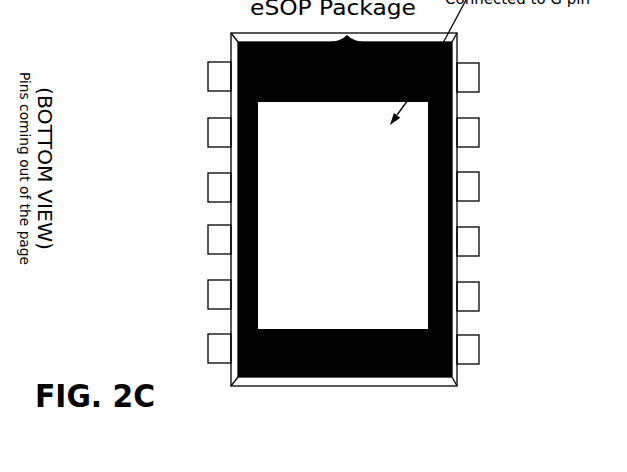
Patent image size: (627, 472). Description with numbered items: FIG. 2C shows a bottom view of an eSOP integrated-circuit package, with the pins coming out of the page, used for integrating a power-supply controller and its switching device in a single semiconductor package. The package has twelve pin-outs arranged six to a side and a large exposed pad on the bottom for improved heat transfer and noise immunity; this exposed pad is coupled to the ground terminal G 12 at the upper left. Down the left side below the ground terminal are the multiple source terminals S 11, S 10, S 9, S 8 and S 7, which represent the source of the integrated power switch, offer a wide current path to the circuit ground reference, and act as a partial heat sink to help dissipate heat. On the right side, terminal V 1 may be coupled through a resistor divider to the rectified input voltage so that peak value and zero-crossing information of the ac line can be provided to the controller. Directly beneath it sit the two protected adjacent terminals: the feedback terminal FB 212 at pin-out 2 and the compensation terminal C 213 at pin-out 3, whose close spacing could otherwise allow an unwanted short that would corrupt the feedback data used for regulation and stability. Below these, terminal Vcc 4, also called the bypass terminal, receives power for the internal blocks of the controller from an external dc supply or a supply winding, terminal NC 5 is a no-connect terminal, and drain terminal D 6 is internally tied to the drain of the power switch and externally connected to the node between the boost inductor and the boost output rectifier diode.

The feedback terminal FB 212 is at (530, 121).
The compensation terminal C 213 is at (533, 172).
The terminal V 1 is at (499, 78).
The pin-out of terminal FB 2 is at (575, 112).
The pin-out of terminal C 3 is at (499, 186).
The terminal Vcc 4 is at (509, 241).
The terminal NC 5 is at (507, 296).
The drain terminal D 6 is at (507, 349).
The source terminal S 7 is at (185, 348).
The source terminal S 8 is at (184, 294).
The source terminal S 9 is at (184, 239).
The source terminal S 10 is at (184, 187).
The source terminal S 11 is at (184, 132).
The ground terminal G 12 is at (183, 76).